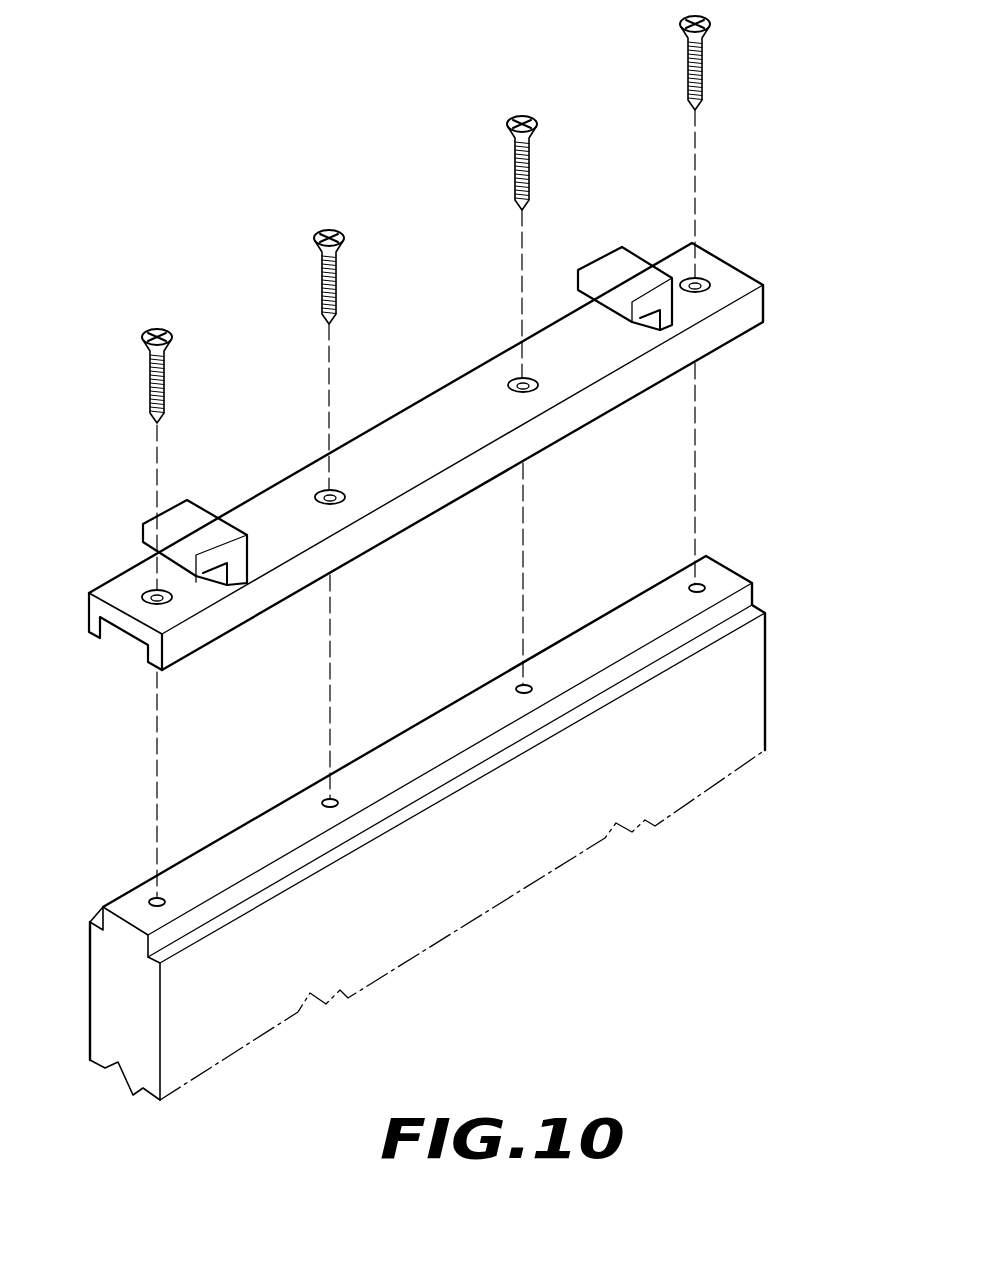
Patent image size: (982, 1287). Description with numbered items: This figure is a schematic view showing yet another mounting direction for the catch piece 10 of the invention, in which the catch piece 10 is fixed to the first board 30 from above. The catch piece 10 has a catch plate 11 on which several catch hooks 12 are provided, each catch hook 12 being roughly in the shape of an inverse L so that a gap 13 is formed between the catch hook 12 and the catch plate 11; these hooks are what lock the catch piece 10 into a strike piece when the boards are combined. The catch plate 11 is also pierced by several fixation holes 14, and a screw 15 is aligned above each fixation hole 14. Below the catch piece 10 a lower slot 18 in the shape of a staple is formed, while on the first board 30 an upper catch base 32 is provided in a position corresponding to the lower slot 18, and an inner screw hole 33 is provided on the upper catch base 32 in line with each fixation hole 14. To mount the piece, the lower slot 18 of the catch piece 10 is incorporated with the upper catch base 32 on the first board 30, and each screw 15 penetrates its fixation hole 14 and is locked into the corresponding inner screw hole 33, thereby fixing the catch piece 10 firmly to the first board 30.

The catch piece 10 is at (724, 254).
The catch plate 11 is at (457, 403).
The catch hook 12 is at (612, 270).
The gap 13 is at (641, 329).
The fixation hole 14 is at (320, 488).
The screw 15 is at (313, 232).
The lower slot 18 is at (133, 641).
The first board 30 is at (769, 612).
The upper catch base 32 is at (228, 868).
The inner screw hole 33 is at (333, 797).